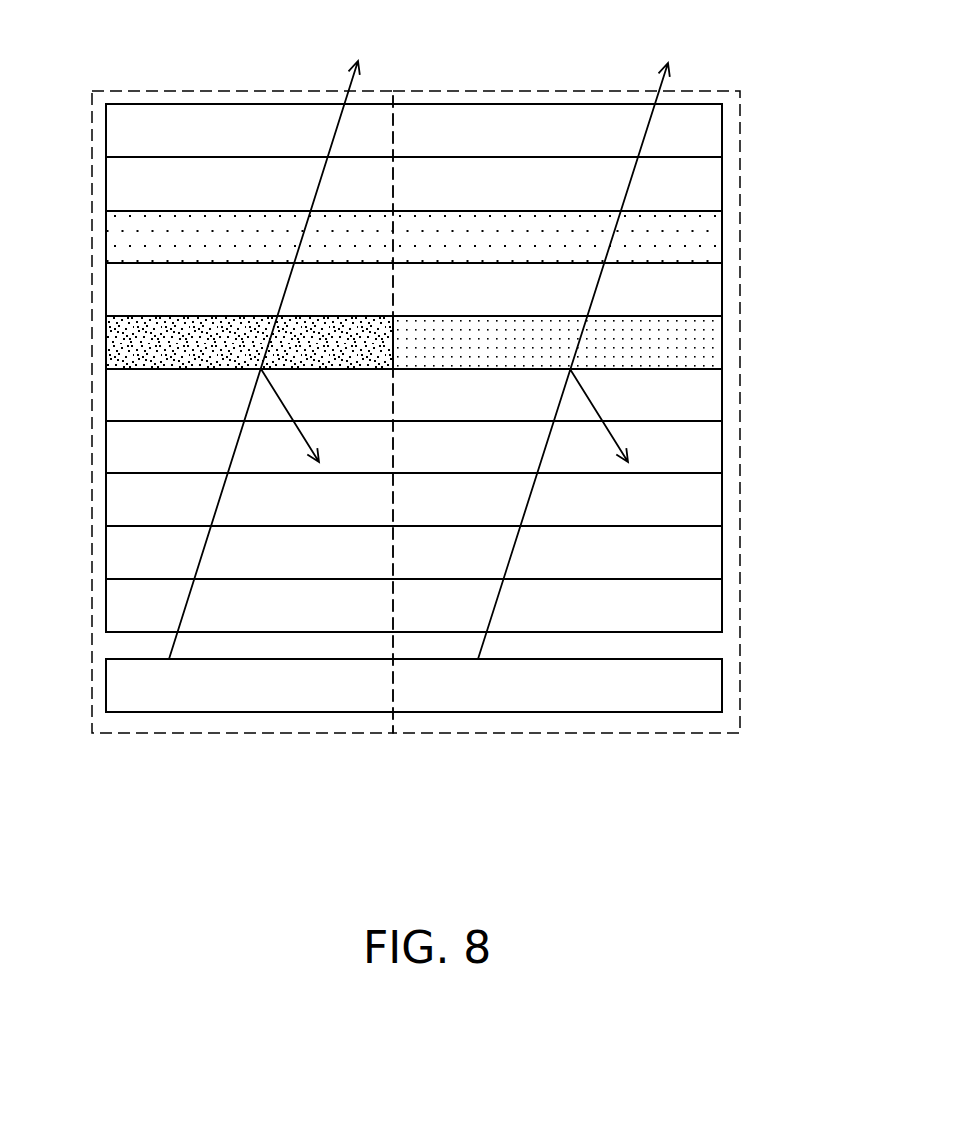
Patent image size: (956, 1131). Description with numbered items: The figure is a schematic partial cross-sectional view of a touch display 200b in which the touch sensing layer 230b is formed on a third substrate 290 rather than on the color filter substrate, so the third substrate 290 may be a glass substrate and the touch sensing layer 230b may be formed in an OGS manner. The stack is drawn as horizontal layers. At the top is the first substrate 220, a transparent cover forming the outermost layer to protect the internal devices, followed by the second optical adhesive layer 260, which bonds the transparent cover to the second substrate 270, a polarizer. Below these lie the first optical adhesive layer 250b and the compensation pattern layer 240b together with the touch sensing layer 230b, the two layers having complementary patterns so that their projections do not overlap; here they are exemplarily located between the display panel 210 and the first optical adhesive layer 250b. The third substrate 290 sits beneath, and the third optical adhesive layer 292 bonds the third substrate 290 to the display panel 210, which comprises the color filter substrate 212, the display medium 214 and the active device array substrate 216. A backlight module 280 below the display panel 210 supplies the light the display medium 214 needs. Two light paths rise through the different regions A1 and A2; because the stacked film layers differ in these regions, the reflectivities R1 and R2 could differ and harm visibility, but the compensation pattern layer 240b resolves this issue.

The touch display 200b is at (785, 875).
The display panel 210 is at (804, 494).
The color filter substrate 212 is at (712, 513).
The display medium 214 is at (712, 553).
The active device array substrate 216 is at (712, 597).
The first substrate 220 is at (712, 133).
The touch sensing layer 230b is at (118, 340).
The compensation pattern layer 240b is at (712, 347).
The first optical adhesive layer 250b is at (712, 291).
The second optical adhesive layer 260 is at (712, 185).
The second substrate 270 is at (712, 238).
The backlight module 280 is at (712, 688).
The third substrate 290 is at (712, 397).
The third optical adhesive layer 292 is at (712, 451).
The region A1 is at (92, 112).
The region A2 is at (700, 90).
The reflectivity R1 is at (264, 360).
The reflectivity R2 is at (574, 361).